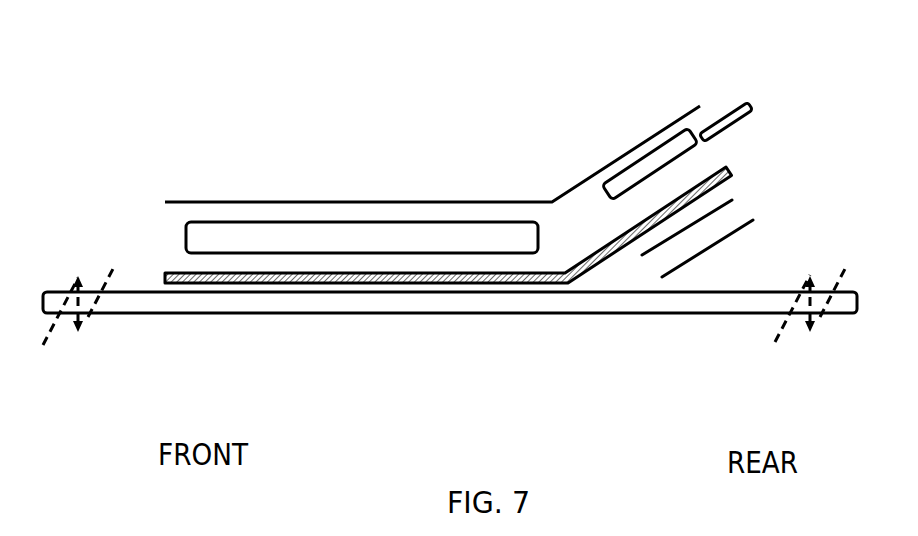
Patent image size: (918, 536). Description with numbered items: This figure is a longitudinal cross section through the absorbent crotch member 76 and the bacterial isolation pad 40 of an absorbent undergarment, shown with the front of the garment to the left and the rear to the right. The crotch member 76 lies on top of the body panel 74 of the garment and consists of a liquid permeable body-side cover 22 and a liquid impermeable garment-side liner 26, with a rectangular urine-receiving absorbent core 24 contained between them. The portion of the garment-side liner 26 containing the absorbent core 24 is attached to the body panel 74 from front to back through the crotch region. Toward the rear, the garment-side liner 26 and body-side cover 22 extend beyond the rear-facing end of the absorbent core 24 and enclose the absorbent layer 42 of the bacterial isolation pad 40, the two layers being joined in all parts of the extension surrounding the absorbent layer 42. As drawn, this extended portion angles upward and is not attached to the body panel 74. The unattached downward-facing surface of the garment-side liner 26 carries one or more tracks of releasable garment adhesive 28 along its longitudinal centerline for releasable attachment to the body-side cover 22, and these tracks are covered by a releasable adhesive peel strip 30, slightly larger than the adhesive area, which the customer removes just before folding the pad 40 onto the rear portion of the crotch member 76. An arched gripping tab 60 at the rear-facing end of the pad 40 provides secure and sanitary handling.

The liquid permeable body-side cover 22 is at (215, 202).
The urine-receiving absorbent core 24 is at (398, 227).
The liquid impermeable garment-side liner 26 is at (730, 168).
The releasable garment adhesive 28 is at (733, 200).
The releasable adhesive peel strip 30 is at (732, 250).
The bacterial isolation pad 40 is at (596, 103).
The absorbent layer 42 is at (630, 177).
The arched gripping tab 60 is at (750, 112).
The body panel 74 is at (128, 316).
The absorbent crotch member 76 is at (338, 146).